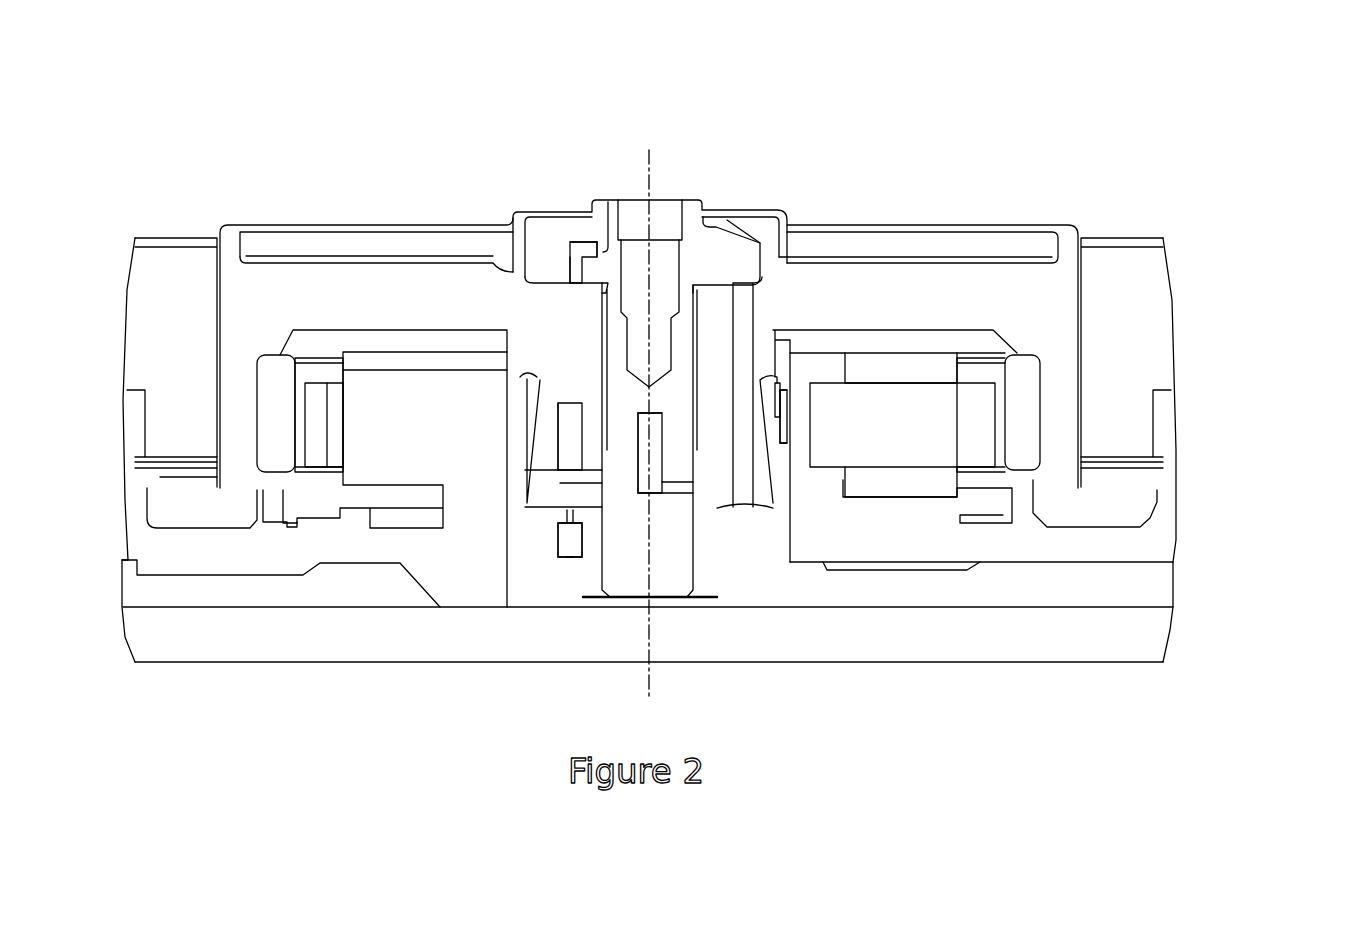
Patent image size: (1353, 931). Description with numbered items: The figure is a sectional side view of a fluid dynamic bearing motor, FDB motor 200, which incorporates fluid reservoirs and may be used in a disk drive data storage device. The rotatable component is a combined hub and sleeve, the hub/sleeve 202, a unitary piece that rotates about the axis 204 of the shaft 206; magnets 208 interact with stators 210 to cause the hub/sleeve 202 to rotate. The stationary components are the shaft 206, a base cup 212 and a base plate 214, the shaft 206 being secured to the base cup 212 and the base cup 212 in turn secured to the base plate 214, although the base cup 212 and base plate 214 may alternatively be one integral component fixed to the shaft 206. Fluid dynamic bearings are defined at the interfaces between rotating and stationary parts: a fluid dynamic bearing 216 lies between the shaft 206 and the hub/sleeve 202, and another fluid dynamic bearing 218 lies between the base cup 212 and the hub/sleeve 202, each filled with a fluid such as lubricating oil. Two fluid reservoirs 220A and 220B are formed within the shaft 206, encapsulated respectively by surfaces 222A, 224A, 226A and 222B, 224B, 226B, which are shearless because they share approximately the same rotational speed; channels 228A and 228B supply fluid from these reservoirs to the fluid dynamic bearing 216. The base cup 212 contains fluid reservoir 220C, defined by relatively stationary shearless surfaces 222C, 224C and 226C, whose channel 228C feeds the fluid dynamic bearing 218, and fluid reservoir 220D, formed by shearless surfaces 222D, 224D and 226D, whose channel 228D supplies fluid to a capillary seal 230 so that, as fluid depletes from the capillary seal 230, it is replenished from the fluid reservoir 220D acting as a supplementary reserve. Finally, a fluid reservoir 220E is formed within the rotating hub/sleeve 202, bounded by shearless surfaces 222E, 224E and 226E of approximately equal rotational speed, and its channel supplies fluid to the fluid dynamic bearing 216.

The FDB motor 200 is at (1224, 127).
The hub/sleeve 202 is at (1067, 240).
The axis 204 is at (650, 170).
The shaft 206 is at (689, 202).
The magnets 208 is at (280, 445).
The stators 210 is at (360, 417).
The base cup 212 is at (763, 560).
The base plate 214 is at (845, 587).
The fluid dynamic bearing 216 is at (537, 255).
The fluid dynamic bearing 218 is at (525, 507).
The fluid reservoir 220A is at (657, 480).
The fluid reservoir 220B is at (577, 263).
The fluid reservoir 220C is at (572, 553).
The fluid reservoir 220D is at (787, 427).
The fluid reservoir 220E is at (570, 510).
The surface 222A is at (637, 482).
The surface 222B is at (567, 243).
The shearless surface 222C is at (558, 555).
The shearless surface 222D is at (783, 447).
The shearless surface 222E is at (567, 462).
The surface 224A is at (690, 343).
The surface 224B is at (585, 237).
The shearless surface 224C is at (573, 557).
The shearless surface 224D is at (807, 427).
The shearless surface 224E is at (558, 403).
The surface 226A is at (660, 457).
The surface 226B is at (608, 202).
The shearless surface 226C is at (580, 533).
The shearless surface 226D is at (807, 407).
The shearless surface 226E is at (582, 422).
The channel 228A is at (657, 482).
The channel 228B is at (567, 277).
The channel 228C is at (577, 537).
The channel 228D is at (773, 413).
The capillary seal 230 is at (768, 462).